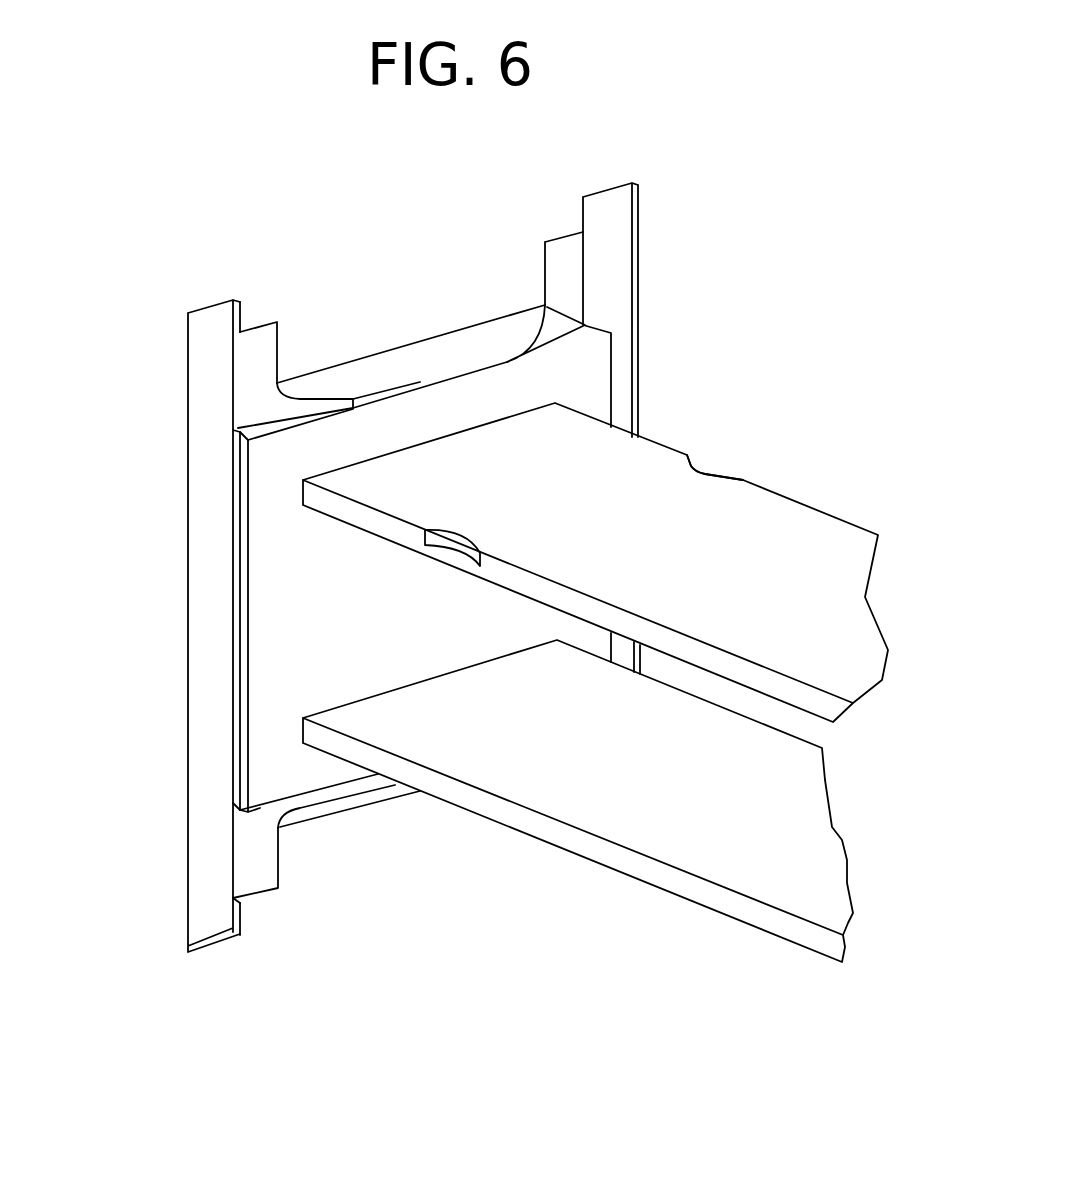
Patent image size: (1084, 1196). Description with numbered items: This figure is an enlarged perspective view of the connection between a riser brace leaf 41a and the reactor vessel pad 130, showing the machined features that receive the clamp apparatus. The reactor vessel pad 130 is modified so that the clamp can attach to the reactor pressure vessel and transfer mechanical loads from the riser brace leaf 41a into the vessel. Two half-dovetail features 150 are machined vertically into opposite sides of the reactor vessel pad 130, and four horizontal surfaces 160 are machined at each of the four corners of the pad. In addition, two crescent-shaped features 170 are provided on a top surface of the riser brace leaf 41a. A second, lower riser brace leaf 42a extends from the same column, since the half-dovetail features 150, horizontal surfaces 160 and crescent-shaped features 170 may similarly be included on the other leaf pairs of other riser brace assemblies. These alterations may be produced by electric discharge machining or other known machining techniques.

The reactor vessel pad 130 is at (272, 598).
The half-dovetail features 150 is at (245, 500).
The horizontal surfaces 160 is at (555, 342).
The crescent-shaped features 170 is at (452, 572).
The riser brace leaf 41a is at (810, 532).
The riser brace leaf 42a is at (618, 816).